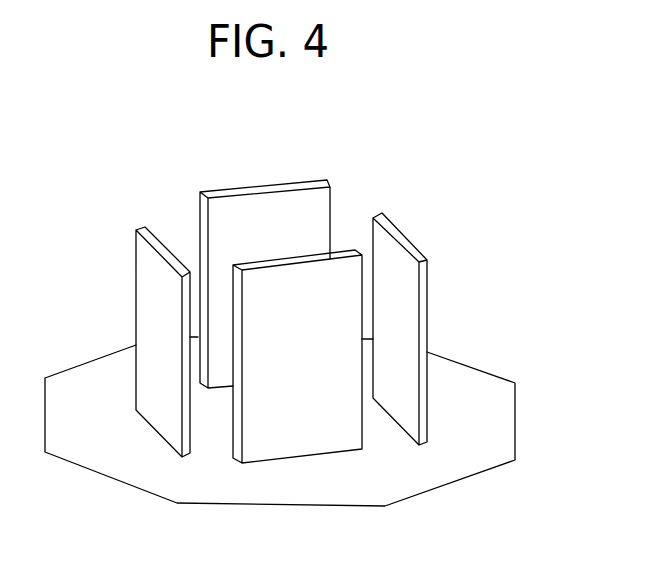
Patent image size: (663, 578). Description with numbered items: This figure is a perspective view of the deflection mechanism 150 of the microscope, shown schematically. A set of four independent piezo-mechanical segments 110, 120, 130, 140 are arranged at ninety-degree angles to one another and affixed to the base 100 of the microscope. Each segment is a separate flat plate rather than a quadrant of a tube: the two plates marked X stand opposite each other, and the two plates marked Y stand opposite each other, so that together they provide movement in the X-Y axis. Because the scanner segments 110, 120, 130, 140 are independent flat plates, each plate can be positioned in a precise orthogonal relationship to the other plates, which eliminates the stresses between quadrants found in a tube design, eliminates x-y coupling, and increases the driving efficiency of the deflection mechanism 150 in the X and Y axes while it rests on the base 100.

The base 100 is at (491, 428).
The piezo-mechanical segment 110 is at (145, 280).
The piezo-mechanical segment 120 is at (423, 297).
The piezo-mechanical segment 130 is at (317, 435).
The piezo-mechanical segment 140 is at (219, 192).
The deflection mechanism 150 is at (370, 170).